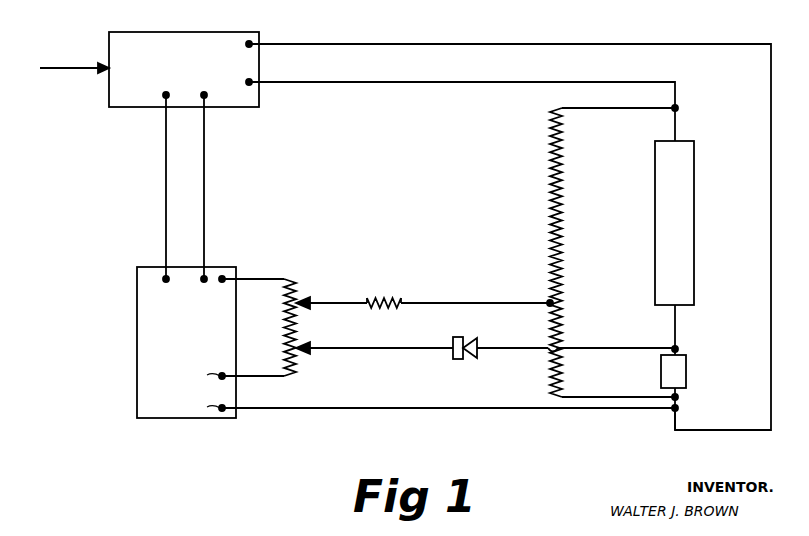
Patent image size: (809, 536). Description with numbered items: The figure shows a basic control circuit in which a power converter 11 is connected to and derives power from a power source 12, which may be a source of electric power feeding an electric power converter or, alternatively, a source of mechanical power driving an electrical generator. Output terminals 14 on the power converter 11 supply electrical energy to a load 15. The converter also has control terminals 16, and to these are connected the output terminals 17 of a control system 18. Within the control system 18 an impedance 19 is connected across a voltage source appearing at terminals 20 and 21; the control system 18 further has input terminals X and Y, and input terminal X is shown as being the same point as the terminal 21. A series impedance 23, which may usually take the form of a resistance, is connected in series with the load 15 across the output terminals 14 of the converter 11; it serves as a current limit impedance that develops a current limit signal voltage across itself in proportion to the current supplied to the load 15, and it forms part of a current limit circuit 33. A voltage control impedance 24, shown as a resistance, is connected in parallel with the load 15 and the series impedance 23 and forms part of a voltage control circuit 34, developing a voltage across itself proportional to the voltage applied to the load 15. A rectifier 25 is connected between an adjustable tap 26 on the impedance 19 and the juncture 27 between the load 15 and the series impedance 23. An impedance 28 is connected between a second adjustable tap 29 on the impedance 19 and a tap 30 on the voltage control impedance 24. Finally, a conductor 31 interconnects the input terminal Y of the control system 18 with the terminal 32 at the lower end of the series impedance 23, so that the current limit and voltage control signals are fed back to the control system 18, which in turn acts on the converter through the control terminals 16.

The power converter 11 is at (135, 100).
The power source 12 is at (70, 70).
The output terminals 14 is at (253, 47).
The load 15 is at (694, 174).
The control terminals 16 is at (168, 97).
The output terminals of control system 17 is at (168, 277).
The control system 18 is at (137, 302).
The impedance 19 is at (296, 290).
The terminal 20 is at (223, 277).
The terminal 21 is at (224, 378).
The series impedance 23 is at (686, 362).
The voltage control impedance 24 is at (548, 192).
The rectifier 25 is at (473, 340).
The adjustable tap 26 is at (300, 351).
The juncture 27 is at (677, 347).
The impedance 28 is at (390, 299).
The adjustable tap 29 is at (300, 306).
The tap 30 is at (548, 301).
The conductor 31 is at (455, 410).
The terminal 32 is at (677, 408).
The current limit circuit 33 is at (490, 361).
The voltage control circuit 34 is at (428, 291).